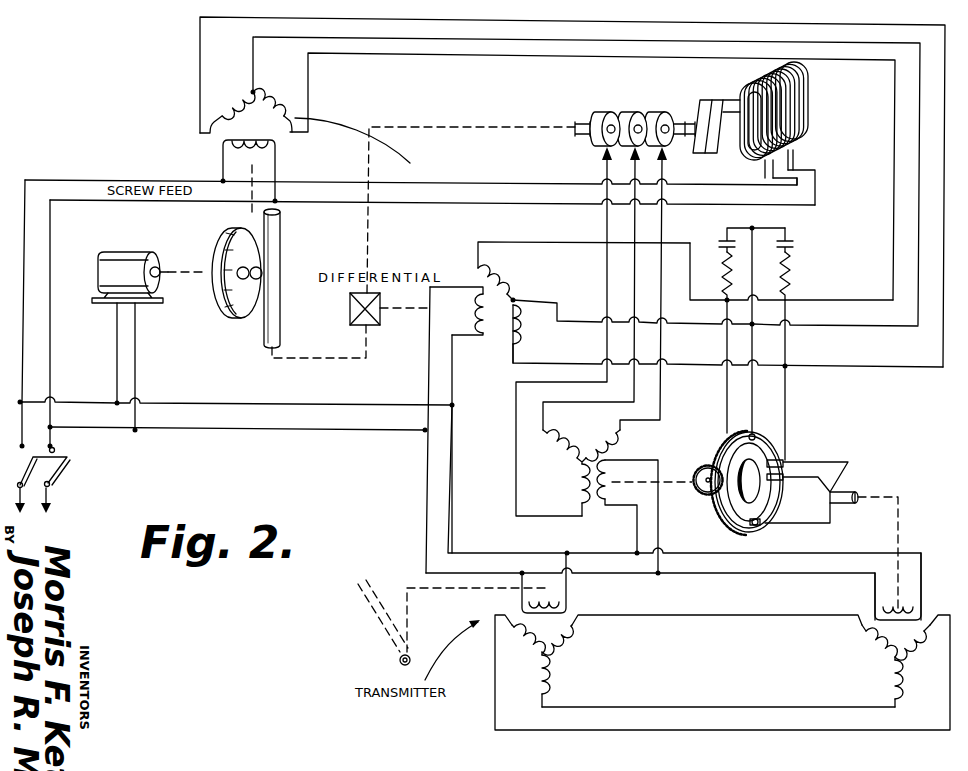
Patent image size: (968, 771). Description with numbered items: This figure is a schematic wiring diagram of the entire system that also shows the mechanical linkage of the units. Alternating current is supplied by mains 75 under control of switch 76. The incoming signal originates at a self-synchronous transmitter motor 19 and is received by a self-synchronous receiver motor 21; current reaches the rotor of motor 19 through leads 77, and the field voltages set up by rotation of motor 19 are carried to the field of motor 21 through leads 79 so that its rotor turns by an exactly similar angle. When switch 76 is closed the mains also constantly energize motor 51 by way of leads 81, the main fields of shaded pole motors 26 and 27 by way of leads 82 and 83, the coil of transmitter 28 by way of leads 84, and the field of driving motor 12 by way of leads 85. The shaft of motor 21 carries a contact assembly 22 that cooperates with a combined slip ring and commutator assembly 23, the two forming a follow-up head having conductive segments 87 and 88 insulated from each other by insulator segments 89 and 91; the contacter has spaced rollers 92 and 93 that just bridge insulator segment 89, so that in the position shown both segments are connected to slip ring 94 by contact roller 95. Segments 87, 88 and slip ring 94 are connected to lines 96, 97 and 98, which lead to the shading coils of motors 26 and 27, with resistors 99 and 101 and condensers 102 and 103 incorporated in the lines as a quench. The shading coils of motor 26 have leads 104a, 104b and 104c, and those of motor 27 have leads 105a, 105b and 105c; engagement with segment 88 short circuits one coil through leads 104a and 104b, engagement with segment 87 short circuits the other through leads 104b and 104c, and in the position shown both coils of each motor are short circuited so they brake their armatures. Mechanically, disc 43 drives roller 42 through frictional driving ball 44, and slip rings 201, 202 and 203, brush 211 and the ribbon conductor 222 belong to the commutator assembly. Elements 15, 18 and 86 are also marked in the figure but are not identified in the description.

The lead 104a is at (332, 18).
The lead 104b is at (490, 76).
The lead 104c is at (575, 76).
The shaded pole motor 26 is at (266, 134).
The leads 82 is at (223, 167).
The motor 51 is at (132, 262).
The leads 81 is at (135, 340).
The disc 43 is at (238, 318).
The frictional driving ball 44 is at (238, 282).
The roller 42 is at (281, 240).
The mains 75 is at (24, 338).
The switch 76 is at (68, 459).
The supply conductors 15 is at (48, 492).
The shaded pole motor 27 is at (498, 356).
The leads 83 is at (452, 374).
The lead 105a is at (600, 262).
The lead 105b is at (594, 290).
The lead 105c is at (602, 340).
The slip ring 201 is at (602, 116).
The slip ring 202 is at (650, 114).
The slip ring 203 is at (670, 112).
The brush 211 is at (722, 146).
The transmitter 28 is at (737, 84).
The conductor 222 is at (785, 113).
The leads 84 is at (802, 186).
The phase conductors 86 is at (613, 396).
The condenser 103 is at (718, 243).
The condenser 102 is at (822, 229).
The resistor 99 is at (795, 272).
The resistor 101 is at (722, 283).
The line 96 is at (727, 427).
The line 98 is at (756, 388).
The line 97 is at (788, 403).
The driving motor 12 is at (568, 479).
The leads 85 is at (660, 534).
The roller 92 is at (716, 466).
The insulator segment 91 is at (733, 521).
The insulator segment 89 is at (758, 462).
The conductive segment 87 is at (742, 487).
The conductive segment 88 is at (762, 493).
The slip ring 94 is at (750, 434).
The contact roller 95 is at (760, 526).
The roller 93 is at (774, 466).
The contact assembly 22 is at (850, 492).
The combined slip ring and commutator assembly 23 is at (734, 541).
The leads 77 is at (566, 590).
The receiver rotor winding 18 is at (838, 555).
The self-synchronous transmitter motor 19 is at (588, 668).
The self-synchronous receiver motor 21 is at (886, 680).
The leads 79 is at (740, 617).